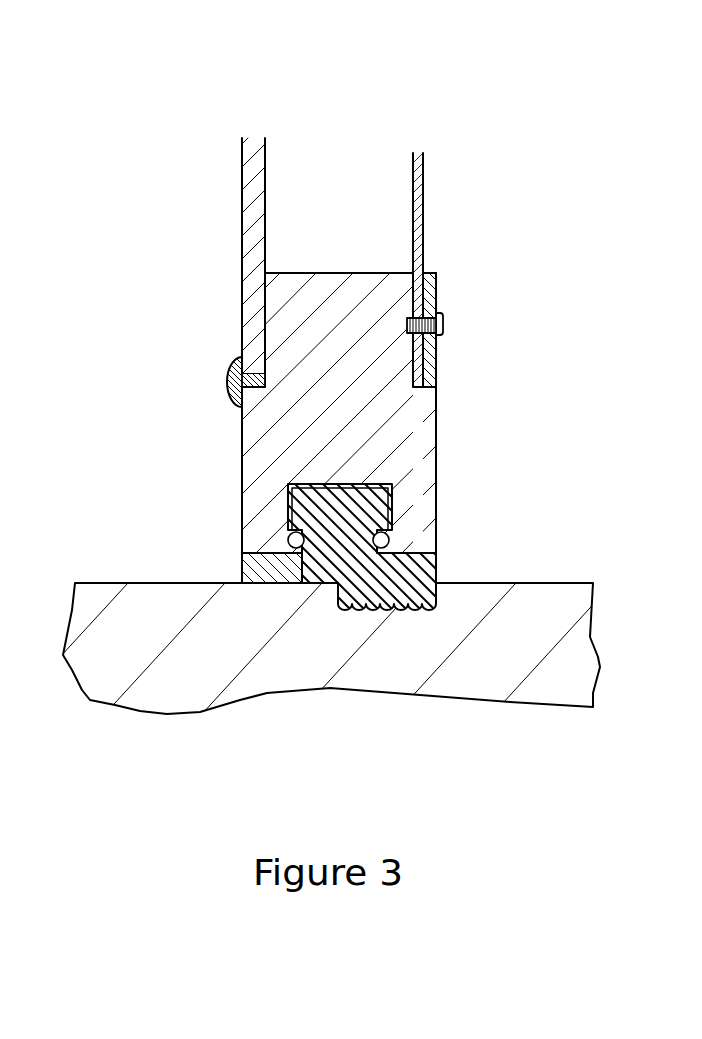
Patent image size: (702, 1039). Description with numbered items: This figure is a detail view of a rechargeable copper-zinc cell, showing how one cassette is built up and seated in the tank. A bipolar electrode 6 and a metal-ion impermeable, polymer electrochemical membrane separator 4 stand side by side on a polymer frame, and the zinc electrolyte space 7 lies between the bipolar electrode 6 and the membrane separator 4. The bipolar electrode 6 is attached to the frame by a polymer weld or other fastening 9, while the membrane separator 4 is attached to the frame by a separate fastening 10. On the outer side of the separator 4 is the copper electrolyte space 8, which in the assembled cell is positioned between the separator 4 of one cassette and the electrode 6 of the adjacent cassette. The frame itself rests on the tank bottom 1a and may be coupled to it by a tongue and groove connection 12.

The copper electrolyte space 8 is at (182, 155).
The zinc electrolyte space 7 is at (347, 230).
The bipolar electrode 6 is at (242, 228).
The metal-ion impermeable, polymer electrochemical membrane separator 4 is at (423, 203).
The fastening 10 is at (436, 285).
The polymer weld or other fastening 9 is at (226, 384).
The tongue and groove connection 12 is at (402, 509).
The tank bottom 1a is at (488, 660).